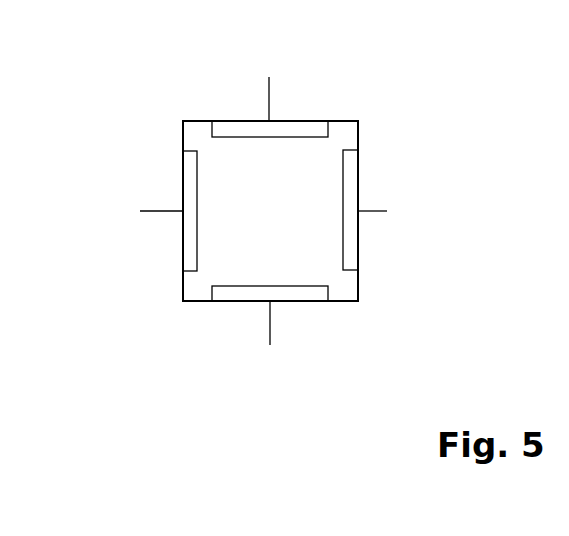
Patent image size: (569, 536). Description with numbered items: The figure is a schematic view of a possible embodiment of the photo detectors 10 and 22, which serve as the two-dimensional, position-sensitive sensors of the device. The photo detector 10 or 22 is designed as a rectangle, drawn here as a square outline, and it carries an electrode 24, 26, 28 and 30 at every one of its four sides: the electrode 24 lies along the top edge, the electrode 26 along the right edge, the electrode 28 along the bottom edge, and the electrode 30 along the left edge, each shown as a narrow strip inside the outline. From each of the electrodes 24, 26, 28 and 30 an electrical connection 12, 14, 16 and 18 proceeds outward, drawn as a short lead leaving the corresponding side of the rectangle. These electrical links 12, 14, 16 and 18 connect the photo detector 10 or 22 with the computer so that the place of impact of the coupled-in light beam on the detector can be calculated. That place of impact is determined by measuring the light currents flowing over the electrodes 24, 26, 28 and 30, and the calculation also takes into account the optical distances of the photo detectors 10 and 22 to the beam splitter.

The photo detector 10 is at (343, 137).
The photo detector 22 is at (270, 211).
The electrical connection 12 is at (297, 31).
The electrical connection 14 is at (387, 211).
The electrical connection 16 is at (270, 338).
The electrical connection 18 is at (148, 210).
The electrode 24 is at (221, 128).
The electrode 26 is at (352, 242).
The electrode 28 is at (228, 293).
The electrode 30 is at (188, 167).